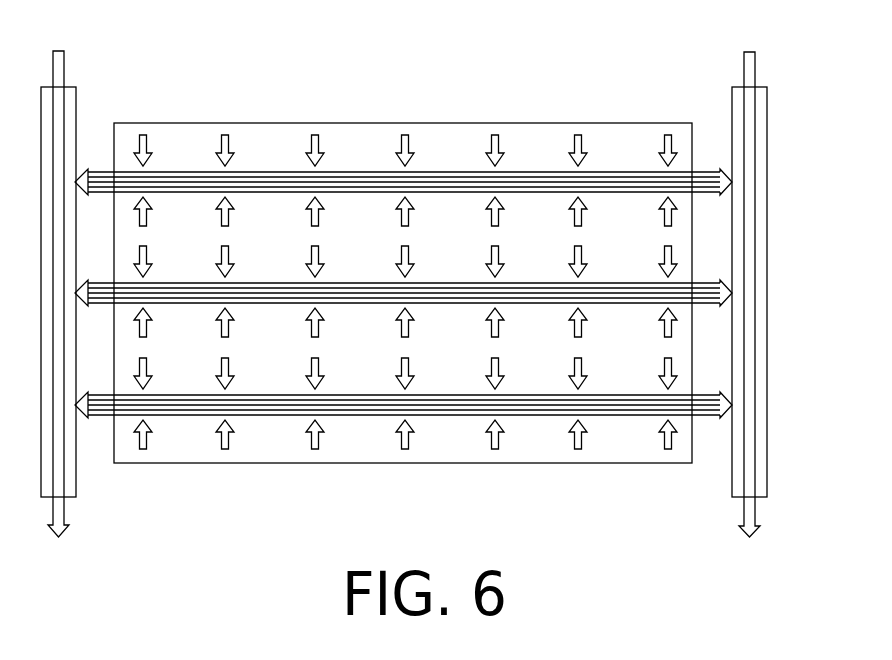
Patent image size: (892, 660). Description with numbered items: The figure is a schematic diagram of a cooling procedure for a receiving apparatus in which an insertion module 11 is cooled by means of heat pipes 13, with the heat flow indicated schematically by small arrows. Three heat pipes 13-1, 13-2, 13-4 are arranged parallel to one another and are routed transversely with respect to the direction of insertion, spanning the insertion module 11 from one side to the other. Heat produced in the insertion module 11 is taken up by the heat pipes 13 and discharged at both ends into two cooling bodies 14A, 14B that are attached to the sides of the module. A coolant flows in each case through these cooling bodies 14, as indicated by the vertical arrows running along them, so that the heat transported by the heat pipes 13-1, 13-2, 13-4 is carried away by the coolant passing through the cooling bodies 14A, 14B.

The insertion module 11 is at (333, 465).
The heat pipe 13 is at (403, 246).
The first heat pipe 13-1 is at (517, 182).
The second heat pipe 13-2 is at (517, 295).
The heat pipe 13-4 is at (517, 408).
The cooling body 14 is at (443, 295).
The first cooling body 14A is at (68, 103).
The second cooling body 14B is at (762, 106).